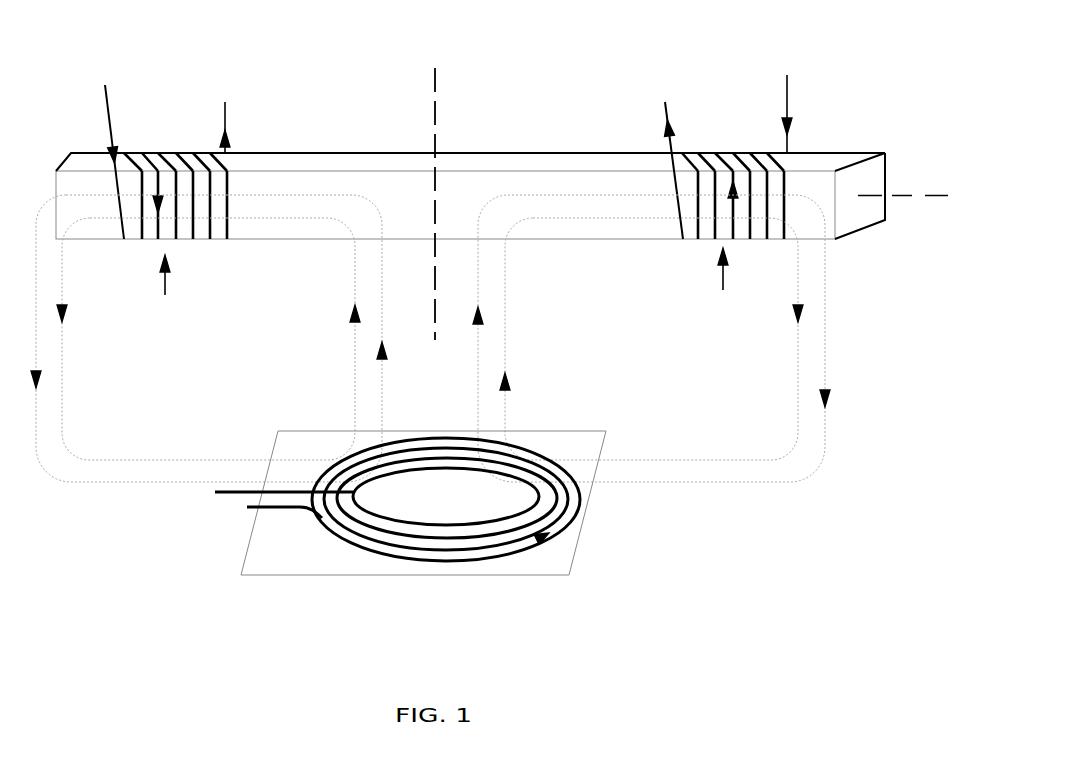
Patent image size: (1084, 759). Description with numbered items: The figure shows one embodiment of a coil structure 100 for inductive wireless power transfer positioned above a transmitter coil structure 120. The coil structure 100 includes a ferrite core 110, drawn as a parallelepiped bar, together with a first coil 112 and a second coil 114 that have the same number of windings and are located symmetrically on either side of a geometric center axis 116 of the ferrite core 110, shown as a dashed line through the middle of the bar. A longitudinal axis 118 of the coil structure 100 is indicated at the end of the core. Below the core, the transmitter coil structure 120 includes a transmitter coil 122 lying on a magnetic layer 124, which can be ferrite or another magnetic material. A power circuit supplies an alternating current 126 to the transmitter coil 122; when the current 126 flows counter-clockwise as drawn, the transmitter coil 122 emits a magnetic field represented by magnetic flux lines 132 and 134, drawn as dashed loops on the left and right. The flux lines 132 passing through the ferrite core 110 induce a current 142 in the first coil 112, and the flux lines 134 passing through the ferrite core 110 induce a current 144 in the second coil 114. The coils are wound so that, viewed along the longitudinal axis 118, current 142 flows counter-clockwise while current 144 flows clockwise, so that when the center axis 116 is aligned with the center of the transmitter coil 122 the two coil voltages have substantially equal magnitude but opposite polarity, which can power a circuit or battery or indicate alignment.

The coil structure 100 is at (160, 85).
The ferrite core 110 is at (297, 153).
The first coil 112 is at (159, 286).
The second coil 114 is at (724, 282).
The geometric center axis 116 is at (436, 103).
The longitudinal axis 118 is at (912, 195).
The transmitter coil structure 120 is at (258, 599).
The transmitter coil 122 is at (318, 540).
The magnetic layer 124 is at (367, 575).
The alternating current 126 is at (515, 550).
The magnetic flux lines 132 is at (68, 482).
The magnetic flux lines 134 is at (717, 482).
The current 142 is at (227, 134).
The current 144 is at (668, 128).